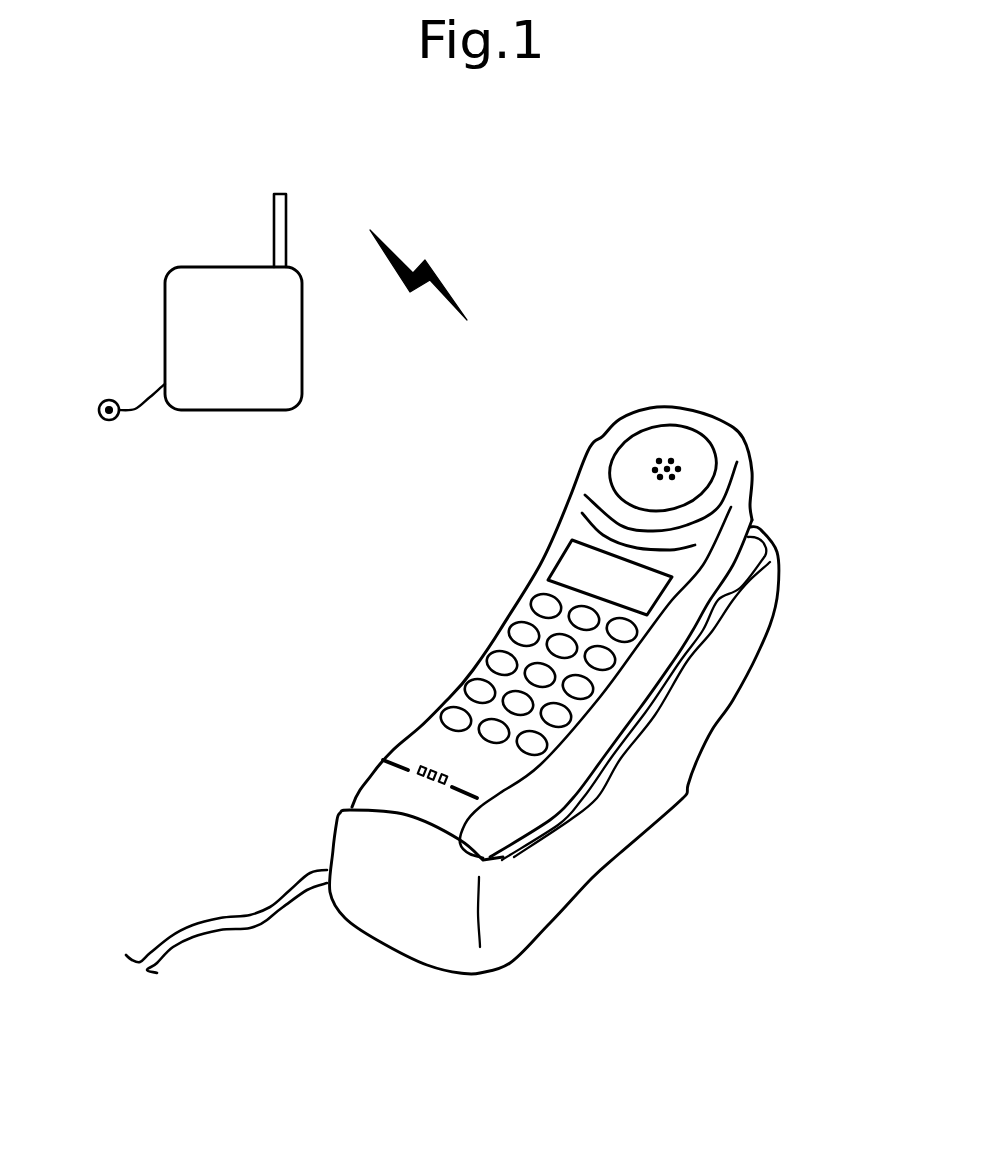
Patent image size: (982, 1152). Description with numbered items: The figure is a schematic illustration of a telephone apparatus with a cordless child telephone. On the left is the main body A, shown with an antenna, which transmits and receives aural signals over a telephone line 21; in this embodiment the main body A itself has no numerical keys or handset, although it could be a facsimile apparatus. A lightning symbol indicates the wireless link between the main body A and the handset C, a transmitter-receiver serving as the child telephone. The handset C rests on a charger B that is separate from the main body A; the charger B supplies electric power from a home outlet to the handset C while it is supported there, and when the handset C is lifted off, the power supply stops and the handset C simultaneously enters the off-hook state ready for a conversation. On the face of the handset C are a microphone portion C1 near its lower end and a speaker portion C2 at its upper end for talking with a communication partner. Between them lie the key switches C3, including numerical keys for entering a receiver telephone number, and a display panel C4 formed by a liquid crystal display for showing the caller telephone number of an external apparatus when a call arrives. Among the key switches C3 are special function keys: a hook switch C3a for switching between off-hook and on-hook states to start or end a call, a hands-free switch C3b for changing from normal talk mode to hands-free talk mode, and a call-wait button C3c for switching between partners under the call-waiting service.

The telephone line 21 is at (140, 402).
The main body A is at (285, 377).
The charger B is at (682, 759).
The handset C is at (745, 442).
The microphone portion C1 is at (420, 777).
The speaker portion C2 is at (660, 457).
The key switches C3 is at (543, 672).
The hook switch C3a is at (545, 600).
The hands-free switch C3b is at (532, 742).
The call-wait button C3c is at (450, 710).
The display panel C4 is at (587, 563).